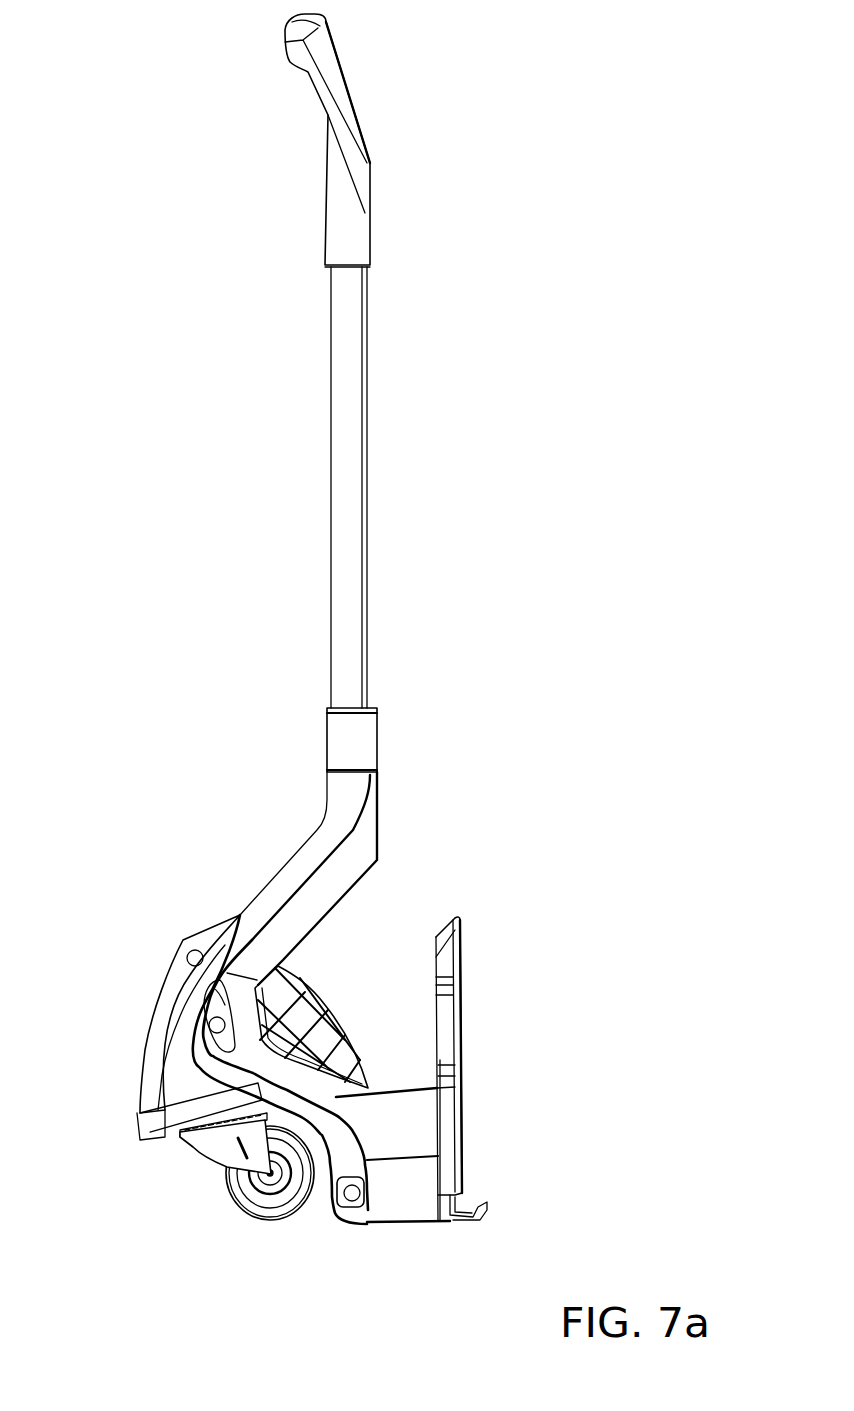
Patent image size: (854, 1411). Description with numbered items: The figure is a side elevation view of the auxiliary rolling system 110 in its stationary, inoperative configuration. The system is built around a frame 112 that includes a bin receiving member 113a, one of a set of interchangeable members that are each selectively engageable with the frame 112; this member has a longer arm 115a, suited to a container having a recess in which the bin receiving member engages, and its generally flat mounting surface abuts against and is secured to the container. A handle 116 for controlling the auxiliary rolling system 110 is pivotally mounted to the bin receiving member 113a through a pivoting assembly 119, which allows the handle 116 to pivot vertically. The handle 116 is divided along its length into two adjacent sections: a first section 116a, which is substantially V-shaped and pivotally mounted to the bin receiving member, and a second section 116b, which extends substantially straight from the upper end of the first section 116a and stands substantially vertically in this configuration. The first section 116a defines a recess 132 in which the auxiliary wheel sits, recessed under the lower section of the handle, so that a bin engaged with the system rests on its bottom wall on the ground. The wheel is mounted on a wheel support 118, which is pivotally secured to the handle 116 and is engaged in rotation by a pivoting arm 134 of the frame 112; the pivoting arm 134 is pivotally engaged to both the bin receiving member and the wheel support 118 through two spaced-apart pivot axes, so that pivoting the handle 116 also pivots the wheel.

The auxiliary rolling system 110 is at (288, 508).
The second section of the handle 116b is at (350, 435).
The handle 116 is at (320, 735).
The first section of the handle 116a is at (333, 884).
The pivoting arm 134 is at (327, 1013).
The wheel support 118 is at (147, 1035).
The recess 132 is at (207, 1157).
The frame 112 is at (325, 1198).
The pivoting assembly 119 is at (355, 1202).
The longer arm 115a is at (405, 1087).
The bin receiving member 113a is at (458, 942).